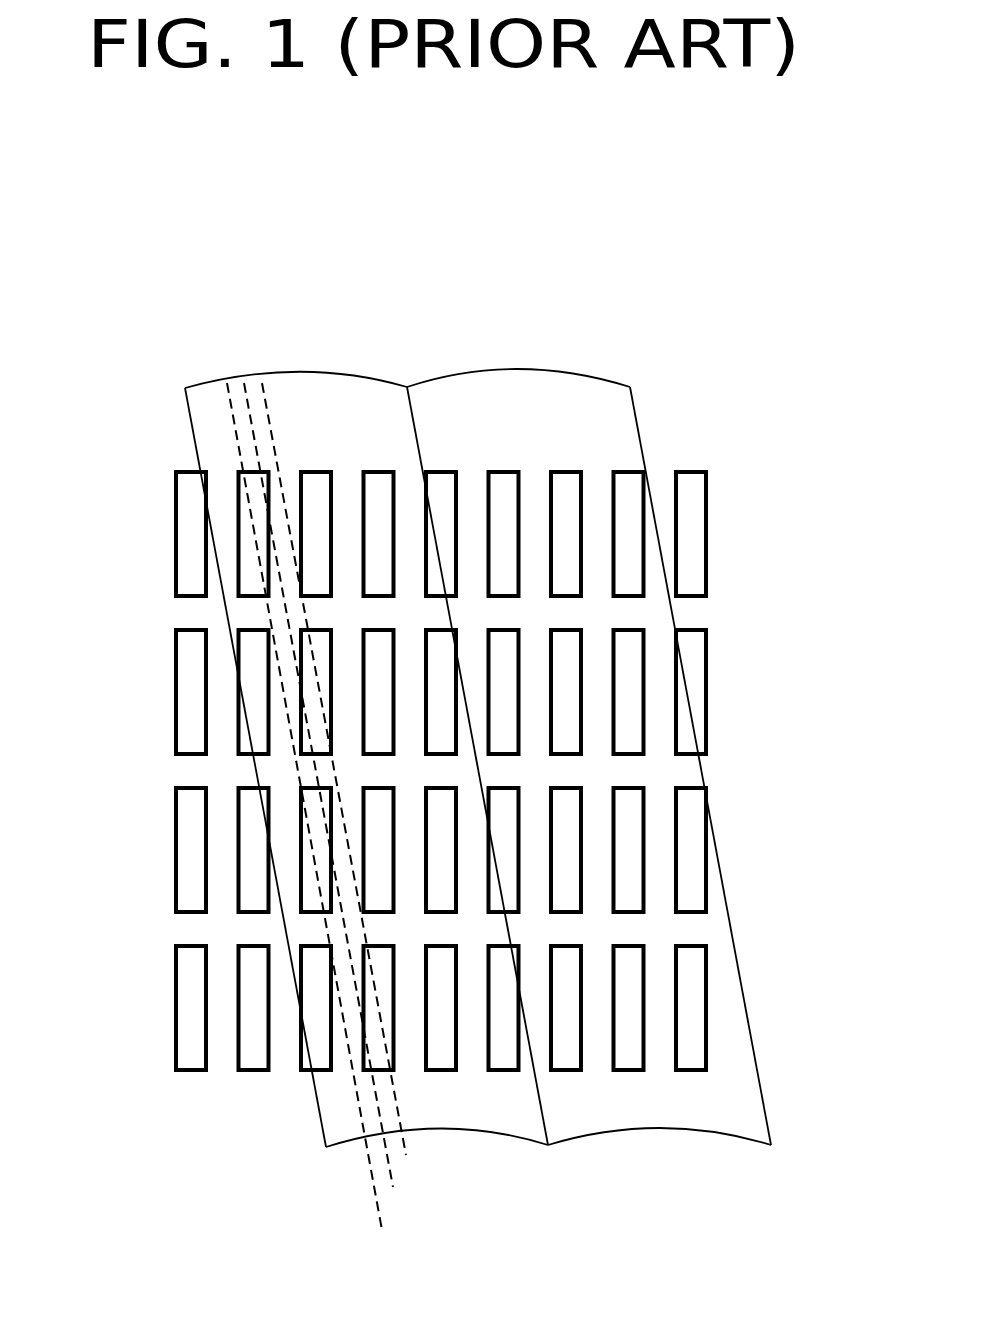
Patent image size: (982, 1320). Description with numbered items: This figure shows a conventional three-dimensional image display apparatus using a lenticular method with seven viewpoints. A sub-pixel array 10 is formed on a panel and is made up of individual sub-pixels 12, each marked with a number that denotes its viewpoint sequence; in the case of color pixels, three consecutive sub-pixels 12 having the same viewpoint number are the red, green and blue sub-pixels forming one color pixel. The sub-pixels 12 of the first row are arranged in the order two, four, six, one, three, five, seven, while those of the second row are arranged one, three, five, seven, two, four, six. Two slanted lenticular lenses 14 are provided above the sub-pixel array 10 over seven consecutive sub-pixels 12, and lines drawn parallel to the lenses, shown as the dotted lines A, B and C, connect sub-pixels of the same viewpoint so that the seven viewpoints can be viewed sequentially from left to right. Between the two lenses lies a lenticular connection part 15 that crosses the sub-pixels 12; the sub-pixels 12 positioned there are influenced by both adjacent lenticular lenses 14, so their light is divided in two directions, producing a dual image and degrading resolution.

The sub-pixel array 10 is at (725, 462).
The sub-pixel 12 is at (176, 514).
The slanted lenticular lens 14 is at (295, 392).
The lenticular connection part 15 is at (420, 432).